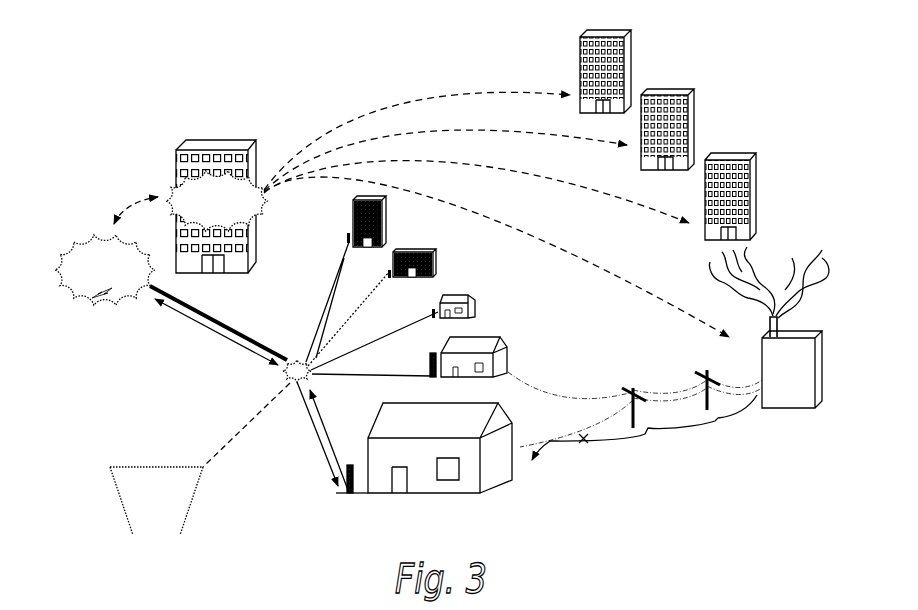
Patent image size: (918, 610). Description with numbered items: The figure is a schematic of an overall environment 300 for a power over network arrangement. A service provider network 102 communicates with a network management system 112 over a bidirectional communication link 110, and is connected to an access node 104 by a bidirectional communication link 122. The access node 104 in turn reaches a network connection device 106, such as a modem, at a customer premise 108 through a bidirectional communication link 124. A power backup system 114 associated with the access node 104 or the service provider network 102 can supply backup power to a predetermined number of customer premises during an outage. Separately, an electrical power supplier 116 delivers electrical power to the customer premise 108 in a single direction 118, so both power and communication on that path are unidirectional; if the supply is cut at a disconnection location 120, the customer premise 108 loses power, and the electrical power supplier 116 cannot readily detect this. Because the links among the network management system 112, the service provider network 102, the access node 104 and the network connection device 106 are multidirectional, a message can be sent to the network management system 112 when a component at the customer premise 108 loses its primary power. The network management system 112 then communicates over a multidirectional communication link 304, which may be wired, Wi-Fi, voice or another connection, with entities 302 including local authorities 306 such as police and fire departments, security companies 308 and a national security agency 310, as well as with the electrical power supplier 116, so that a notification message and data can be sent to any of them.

The overall environment 300 is at (104, 48).
The service provider network 102 is at (92, 238).
The communication link 110 is at (130, 200).
The network management system 112 is at (266, 182).
The communication link 304 is at (400, 183).
The entities 302 is at (741, 72).
The local authorities 306 is at (631, 60).
The security companies 308 is at (694, 115).
The national security agency 310 is at (756, 178).
The electrical power supplier 116 is at (788, 410).
The single direction 118 is at (683, 432).
The disconnection location 120 is at (588, 444).
The customer premise 108 is at (460, 494).
The network connection device 106 is at (351, 494).
The communication link 124 is at (325, 443).
The access node 104 is at (281, 381).
The communication link 122 is at (214, 335).
The power backup system 114 is at (128, 467).